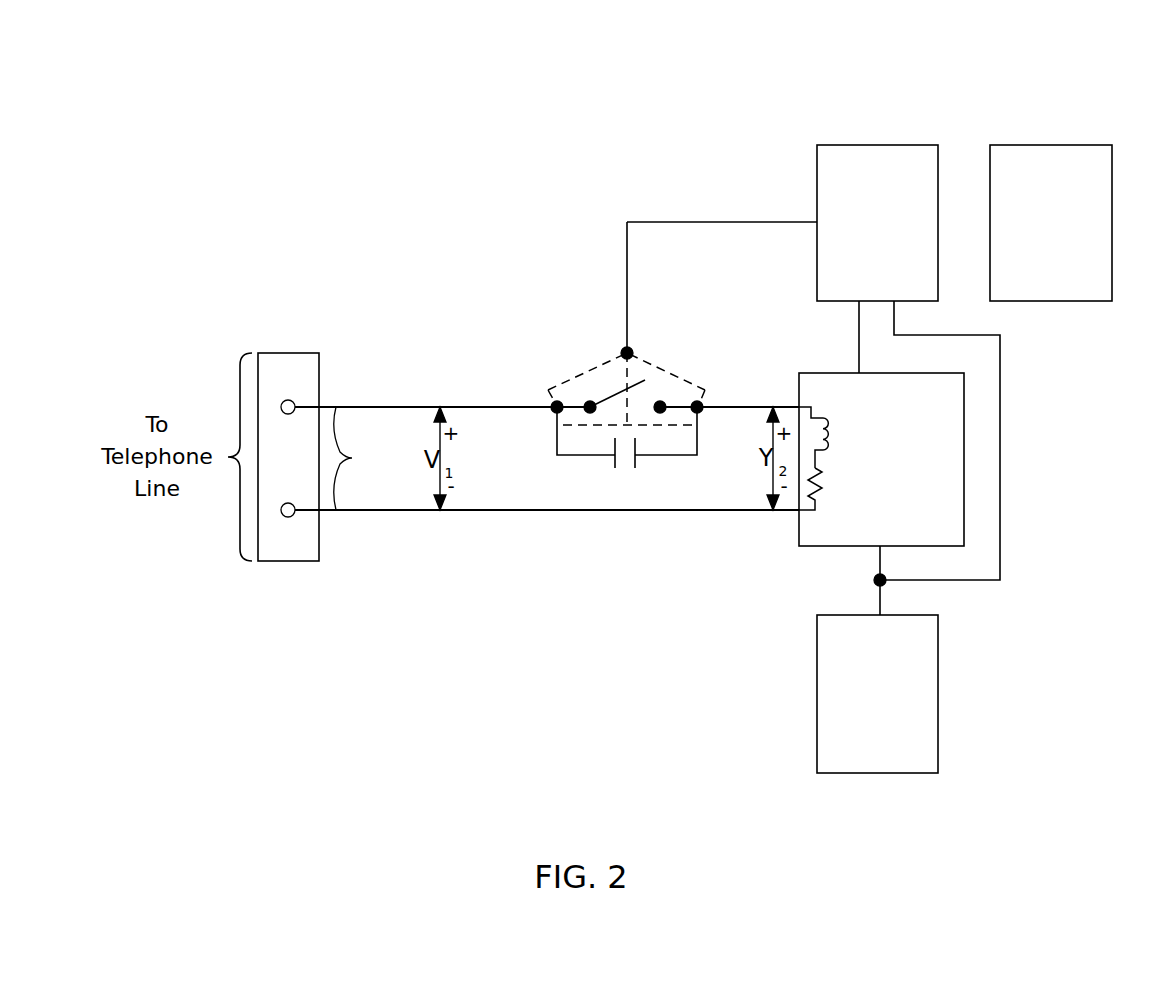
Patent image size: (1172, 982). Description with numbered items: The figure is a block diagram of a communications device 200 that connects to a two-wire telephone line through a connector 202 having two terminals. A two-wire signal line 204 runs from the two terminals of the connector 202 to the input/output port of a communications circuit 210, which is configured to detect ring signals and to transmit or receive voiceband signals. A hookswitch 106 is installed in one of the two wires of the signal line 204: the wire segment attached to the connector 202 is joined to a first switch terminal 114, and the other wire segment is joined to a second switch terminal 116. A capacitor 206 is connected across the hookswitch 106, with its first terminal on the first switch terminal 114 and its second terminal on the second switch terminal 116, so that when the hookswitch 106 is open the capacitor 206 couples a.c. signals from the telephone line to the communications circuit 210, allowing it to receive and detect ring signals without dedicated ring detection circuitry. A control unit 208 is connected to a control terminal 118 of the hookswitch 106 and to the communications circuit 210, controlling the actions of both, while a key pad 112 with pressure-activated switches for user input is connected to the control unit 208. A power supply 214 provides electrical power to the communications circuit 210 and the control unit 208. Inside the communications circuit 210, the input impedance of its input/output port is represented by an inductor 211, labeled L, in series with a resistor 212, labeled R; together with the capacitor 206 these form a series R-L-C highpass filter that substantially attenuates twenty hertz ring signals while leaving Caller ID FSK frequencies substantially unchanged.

The communications device 200 is at (1002, 66).
The connector 202 is at (288, 457).
The two-wire signal line 204 is at (366, 458).
The hookswitch 106 is at (660, 363).
The first switch terminal 114 is at (553, 408).
The second switch terminal 116 is at (703, 407).
The control terminal 118 is at (626, 350).
The capacitor 206 is at (634, 465).
The control unit 208 is at (877, 223).
The key pad 112 is at (1051, 223).
The communications circuit 210 is at (881, 459).
The inductor 211 is at (822, 414).
The resistor 212 is at (822, 512).
The power supply 214 is at (877, 694).